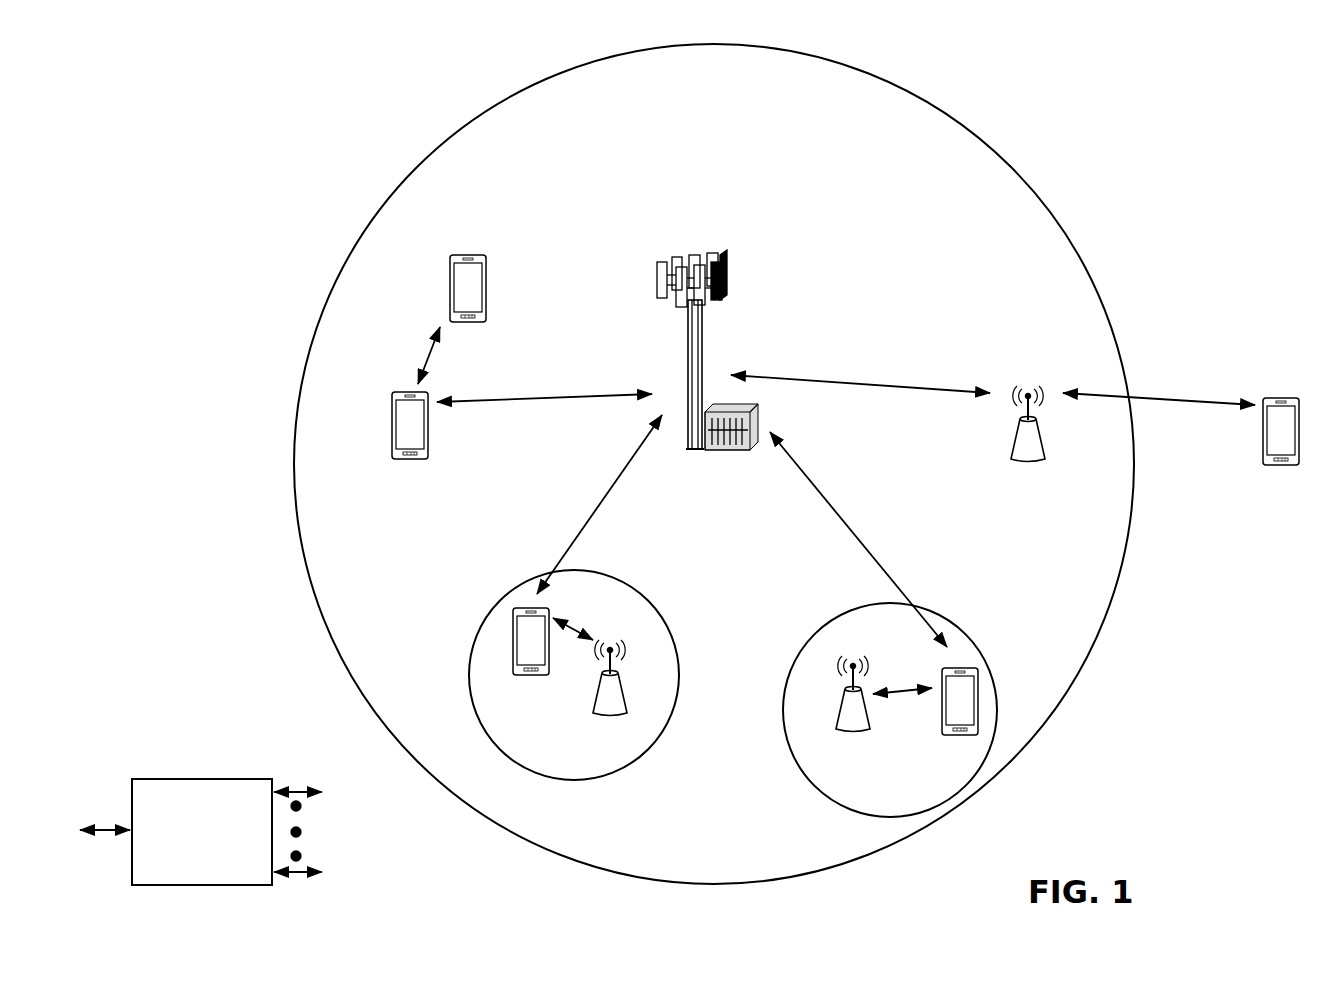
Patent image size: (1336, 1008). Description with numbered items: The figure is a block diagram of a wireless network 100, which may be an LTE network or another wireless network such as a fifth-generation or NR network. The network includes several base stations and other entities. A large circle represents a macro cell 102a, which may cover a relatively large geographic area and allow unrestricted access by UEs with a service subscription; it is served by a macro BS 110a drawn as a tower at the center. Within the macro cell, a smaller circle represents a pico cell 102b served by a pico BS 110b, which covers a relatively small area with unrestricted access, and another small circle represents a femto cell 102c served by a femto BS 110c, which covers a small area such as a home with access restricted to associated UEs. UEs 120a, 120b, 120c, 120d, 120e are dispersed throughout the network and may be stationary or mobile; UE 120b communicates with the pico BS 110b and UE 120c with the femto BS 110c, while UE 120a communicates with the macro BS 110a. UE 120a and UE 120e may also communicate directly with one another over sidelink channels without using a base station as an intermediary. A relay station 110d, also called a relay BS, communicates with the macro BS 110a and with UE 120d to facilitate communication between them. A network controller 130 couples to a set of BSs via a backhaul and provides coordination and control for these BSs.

The wireless network 100 is at (185, 39).
The macro cell 102a is at (993, 150).
The pico cell 102b is at (665, 610).
The femto cell 102c is at (830, 625).
The macro BS 110a is at (700, 248).
The pico BS 110b is at (630, 694).
The femto BS 110c is at (838, 716).
The relay station 110d is at (1030, 387).
The UE 120a is at (390, 412).
The UE 120b is at (525, 680).
The UE 120c is at (943, 738).
The UE 120d is at (1292, 397).
The UE 120e is at (446, 278).
The network controller 130 is at (198, 778).